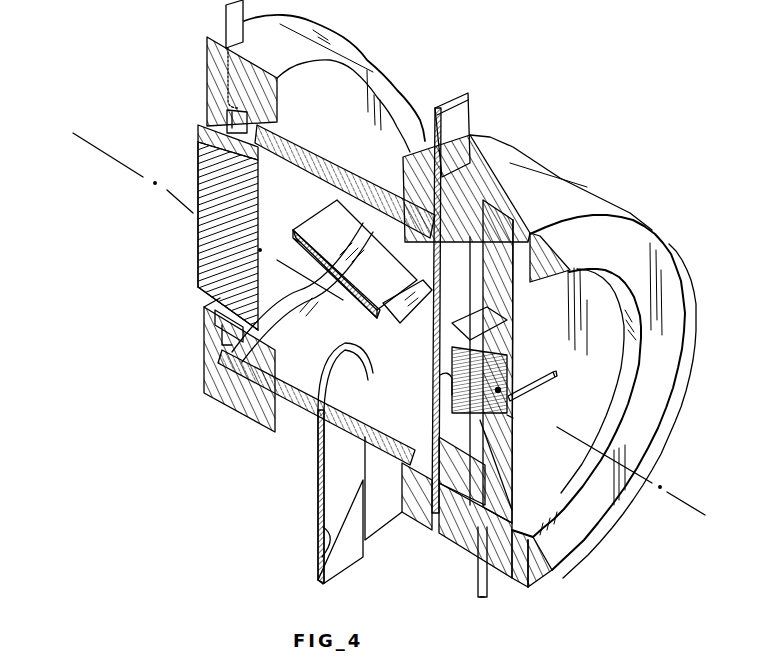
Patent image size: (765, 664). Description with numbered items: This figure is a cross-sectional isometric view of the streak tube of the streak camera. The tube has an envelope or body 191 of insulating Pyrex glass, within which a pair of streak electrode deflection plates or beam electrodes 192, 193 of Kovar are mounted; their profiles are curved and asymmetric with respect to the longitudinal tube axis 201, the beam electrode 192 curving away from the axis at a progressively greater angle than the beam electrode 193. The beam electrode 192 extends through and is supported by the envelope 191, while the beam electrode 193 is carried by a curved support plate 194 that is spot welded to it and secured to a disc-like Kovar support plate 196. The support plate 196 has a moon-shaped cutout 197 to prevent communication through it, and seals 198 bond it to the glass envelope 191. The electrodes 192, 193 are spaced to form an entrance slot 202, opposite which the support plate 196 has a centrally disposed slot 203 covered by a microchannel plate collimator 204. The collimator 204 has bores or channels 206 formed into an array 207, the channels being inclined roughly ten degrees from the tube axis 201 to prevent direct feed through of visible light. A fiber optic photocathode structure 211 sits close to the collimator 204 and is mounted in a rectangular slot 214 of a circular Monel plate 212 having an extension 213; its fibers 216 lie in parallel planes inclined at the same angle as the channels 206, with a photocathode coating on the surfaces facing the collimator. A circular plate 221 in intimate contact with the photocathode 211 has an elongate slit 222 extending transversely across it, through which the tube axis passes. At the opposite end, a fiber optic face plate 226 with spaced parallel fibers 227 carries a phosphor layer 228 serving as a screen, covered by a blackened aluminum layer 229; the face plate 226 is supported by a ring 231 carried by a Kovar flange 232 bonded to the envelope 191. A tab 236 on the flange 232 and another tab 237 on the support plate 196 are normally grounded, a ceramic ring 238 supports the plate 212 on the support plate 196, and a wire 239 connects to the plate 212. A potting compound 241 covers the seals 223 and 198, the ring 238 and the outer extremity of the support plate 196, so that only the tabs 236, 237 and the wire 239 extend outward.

The envelope or body 191 is at (373, 452).
The streak electrode deflection plate 192 is at (332, 494).
The streak electrode deflection plate 193 is at (320, 230).
The curved support plate 194 is at (420, 290).
The disc-like support plate 196 is at (462, 490).
The moon-shaped cutout 197 is at (492, 222).
The seals 198 is at (427, 495).
The longitudinal tube axis 201 is at (108, 158).
The entrance slot 202 is at (387, 323).
The centrally disposed slot 203 is at (437, 373).
The microchannel plate collimator 204 is at (440, 412).
The bores or channels 206 is at (462, 347).
The array 207 is at (508, 435).
The fiber optic photocathode structure 211 is at (508, 393).
The circular plate 212 is at (520, 222).
The extension 213 is at (475, 323).
The rectangular slot 214 is at (490, 363).
The fibers 216 is at (500, 418).
The circular plate 221 is at (597, 403).
The elongate slit 222 is at (556, 374).
The seals 223 is at (252, 93).
The fiber optic face plate 226 is at (190, 240).
The spaced parallel fibers 227 is at (193, 223).
The layer 228 is at (196, 260).
The thin metallic layer 229 is at (200, 287).
The ring 231 is at (197, 128).
The flange 232 is at (240, 113).
The tab 236 is at (226, 18).
The tab 237 is at (460, 128).
The ring 238 is at (468, 533).
The wire 239 is at (487, 587).
The potting compound 241 is at (207, 60).